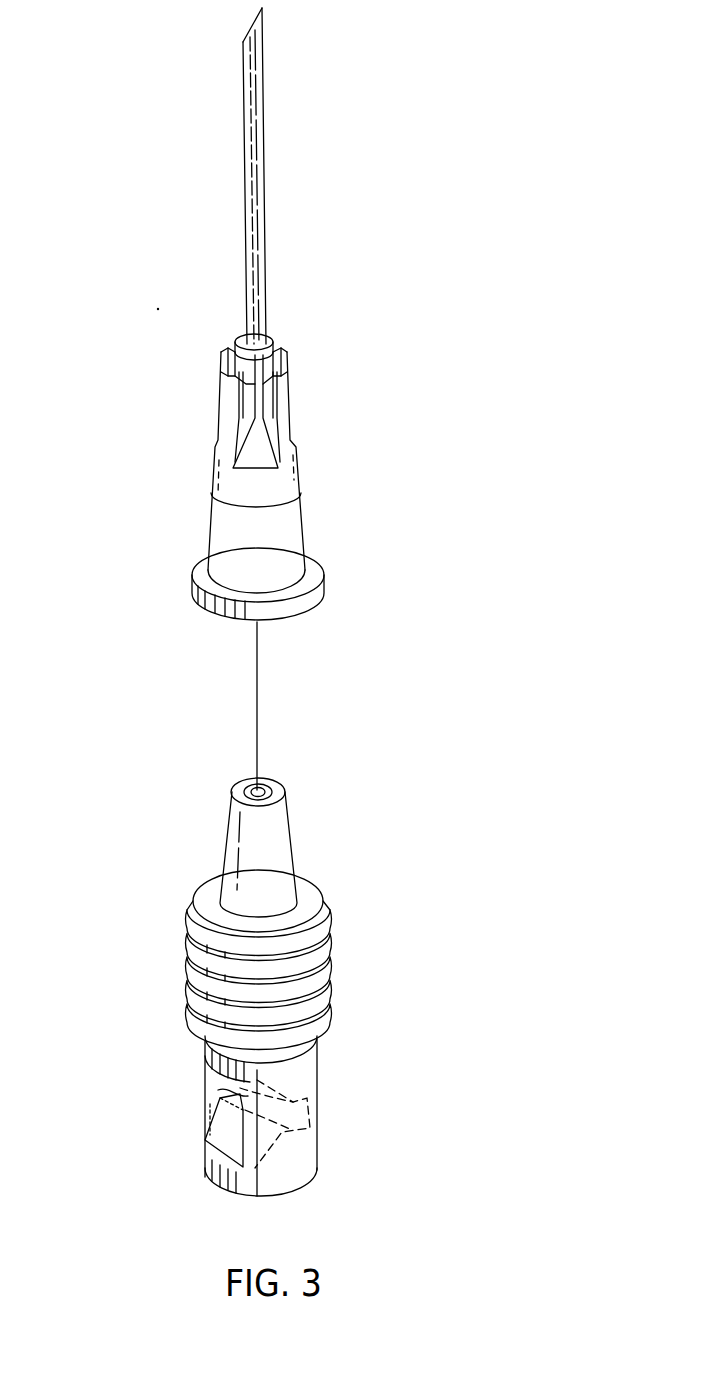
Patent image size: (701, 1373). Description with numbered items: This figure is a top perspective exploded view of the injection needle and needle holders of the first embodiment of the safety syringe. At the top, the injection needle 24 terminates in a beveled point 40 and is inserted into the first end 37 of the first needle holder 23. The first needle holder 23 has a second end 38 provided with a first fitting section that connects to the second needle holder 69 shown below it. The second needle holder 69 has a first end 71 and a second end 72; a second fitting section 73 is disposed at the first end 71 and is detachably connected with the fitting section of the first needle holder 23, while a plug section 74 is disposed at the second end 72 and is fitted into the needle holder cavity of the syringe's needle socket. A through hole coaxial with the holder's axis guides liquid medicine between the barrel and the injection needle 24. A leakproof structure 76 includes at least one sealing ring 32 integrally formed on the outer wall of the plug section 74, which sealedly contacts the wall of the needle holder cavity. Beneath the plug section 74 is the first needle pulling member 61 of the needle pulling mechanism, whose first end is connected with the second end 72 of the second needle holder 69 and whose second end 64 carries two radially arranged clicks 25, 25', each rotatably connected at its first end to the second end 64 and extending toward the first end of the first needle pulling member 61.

The needle tip 40 is at (262, 9).
The injection needle 24 is at (258, 140).
The first end of first needle holder 37 is at (272, 334).
The first needle holder 23 is at (285, 464).
The second end of first needle holder 38 is at (300, 614).
The first end of second needle holder 71 is at (277, 787).
The second fitting section 73 is at (170, 782).
The plug section 74 is at (170, 1037).
The second needle holder 69 is at (107, 820).
The sealing ring 32 is at (331, 920).
The leakproof structure 76 is at (400, 896).
The second end of second needle holder 72 is at (325, 1044).
The first needle pulling member 61 is at (175, 1043).
The click 25 is at (199, 1152).
The click 25' is at (314, 1124).
The second end of first needle pulling member 64 is at (290, 1190).